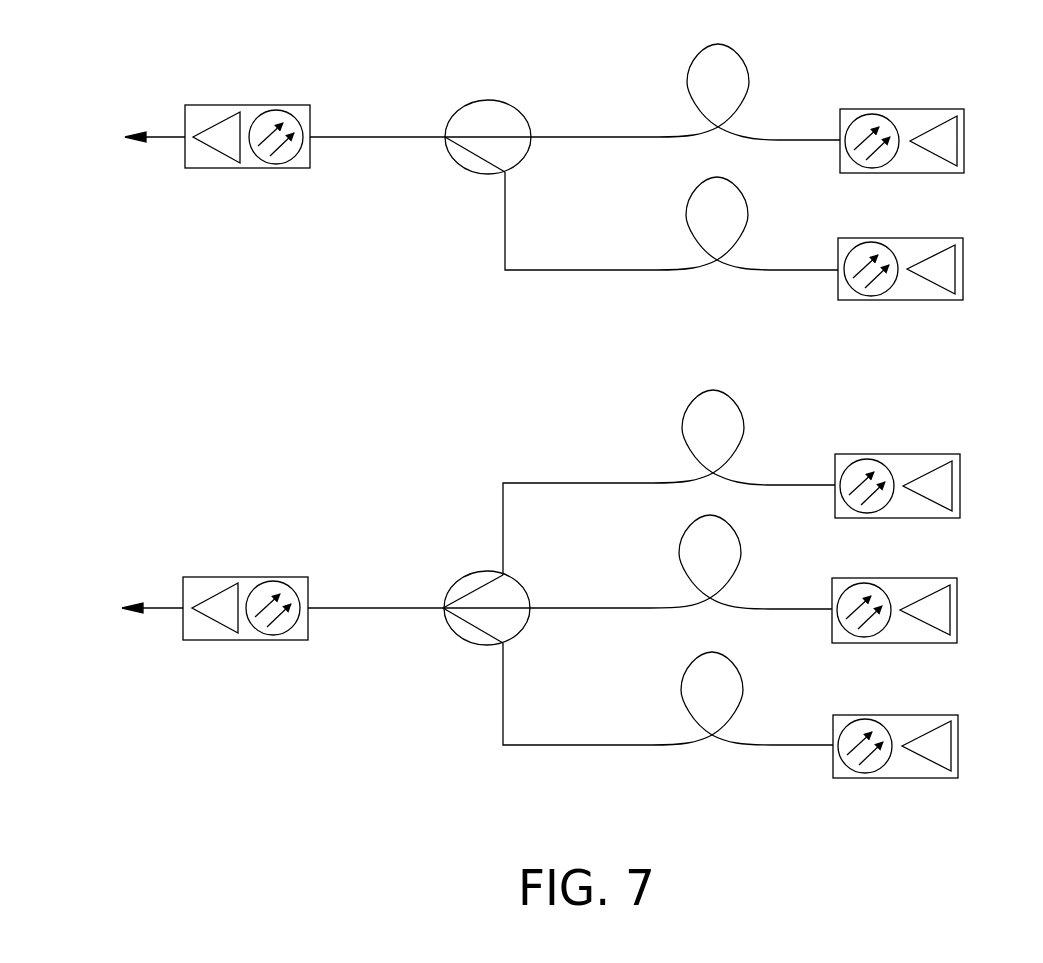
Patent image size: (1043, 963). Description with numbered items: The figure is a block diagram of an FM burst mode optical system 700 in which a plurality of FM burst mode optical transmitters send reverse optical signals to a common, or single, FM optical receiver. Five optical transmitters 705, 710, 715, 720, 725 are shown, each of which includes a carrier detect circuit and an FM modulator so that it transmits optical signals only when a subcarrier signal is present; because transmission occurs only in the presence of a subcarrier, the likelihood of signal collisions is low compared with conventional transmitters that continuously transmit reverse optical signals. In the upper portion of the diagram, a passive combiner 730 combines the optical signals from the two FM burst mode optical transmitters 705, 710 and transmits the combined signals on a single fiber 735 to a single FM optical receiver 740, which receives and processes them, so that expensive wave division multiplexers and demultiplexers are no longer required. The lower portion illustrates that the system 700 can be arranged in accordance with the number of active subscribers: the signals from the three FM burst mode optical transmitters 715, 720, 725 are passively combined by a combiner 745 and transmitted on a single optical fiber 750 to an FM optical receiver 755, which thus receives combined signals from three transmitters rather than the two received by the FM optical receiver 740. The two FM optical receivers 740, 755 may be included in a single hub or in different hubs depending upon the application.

The FM burst mode optical system 700 is at (936, 46).
The FM burst mode optical transmitter 705 is at (927, 108).
The FM burst mode optical transmitter 710 is at (925, 237).
The FM burst mode optical transmitter 715 is at (920, 453).
The FM burst mode optical transmitter 720 is at (917, 578).
The FM burst mode optical transmitter 725 is at (918, 715).
The passive combiner 730 is at (490, 99).
The single fiber 735 is at (332, 137).
The FM optical receiver 740 is at (272, 105).
The combiner 745 is at (487, 648).
The single optical fiber 750 is at (343, 608).
The FM optical receiver 755 is at (270, 577).